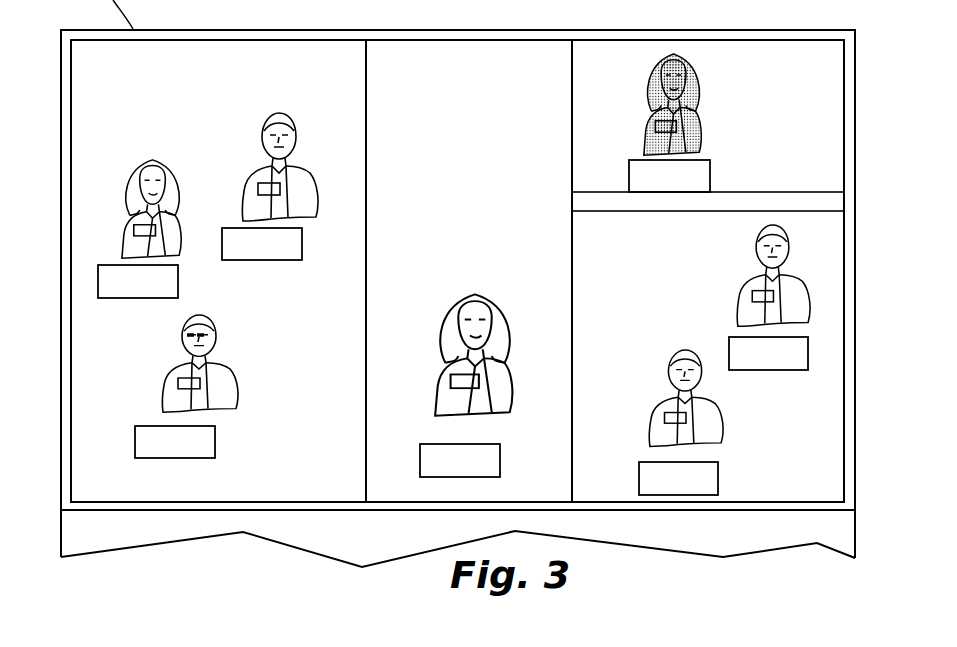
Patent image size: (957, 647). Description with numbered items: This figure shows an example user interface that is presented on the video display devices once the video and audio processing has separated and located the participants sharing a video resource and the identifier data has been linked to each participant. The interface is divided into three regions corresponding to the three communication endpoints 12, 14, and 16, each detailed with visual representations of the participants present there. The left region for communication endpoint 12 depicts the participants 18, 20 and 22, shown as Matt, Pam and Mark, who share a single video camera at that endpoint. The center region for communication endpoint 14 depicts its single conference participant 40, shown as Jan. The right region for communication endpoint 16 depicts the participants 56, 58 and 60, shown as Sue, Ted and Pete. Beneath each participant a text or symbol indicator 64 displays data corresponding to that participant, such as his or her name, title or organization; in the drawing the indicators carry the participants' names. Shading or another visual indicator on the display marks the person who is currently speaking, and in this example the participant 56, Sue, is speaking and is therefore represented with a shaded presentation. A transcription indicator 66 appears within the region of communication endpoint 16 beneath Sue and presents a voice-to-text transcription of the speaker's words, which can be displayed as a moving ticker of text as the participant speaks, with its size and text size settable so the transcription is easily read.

The communication endpoint 12 is at (214, 151).
The communication endpoint 14 is at (501, 211).
The communication endpoint 16 is at (810, 145).
The participant 18 is at (272, 114).
The participant 20 is at (138, 157).
The participant 22 is at (237, 357).
The conference participant 40 is at (508, 350).
The participant 56 is at (687, 93).
The participant 58 is at (757, 246).
The participant 60 is at (648, 404).
The text or symbol indicator 64 is at (178, 283).
The transcription indicator 66 is at (648, 212).